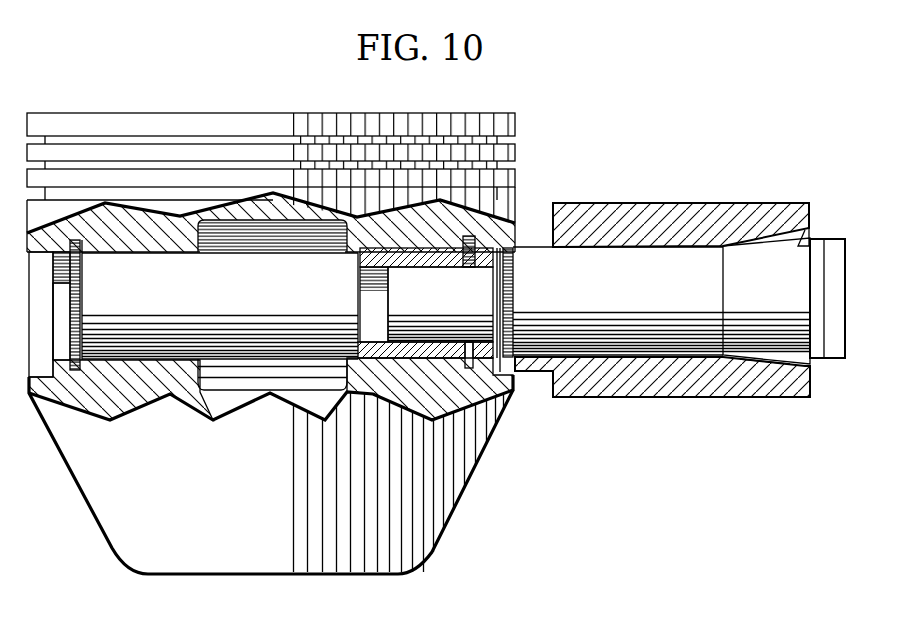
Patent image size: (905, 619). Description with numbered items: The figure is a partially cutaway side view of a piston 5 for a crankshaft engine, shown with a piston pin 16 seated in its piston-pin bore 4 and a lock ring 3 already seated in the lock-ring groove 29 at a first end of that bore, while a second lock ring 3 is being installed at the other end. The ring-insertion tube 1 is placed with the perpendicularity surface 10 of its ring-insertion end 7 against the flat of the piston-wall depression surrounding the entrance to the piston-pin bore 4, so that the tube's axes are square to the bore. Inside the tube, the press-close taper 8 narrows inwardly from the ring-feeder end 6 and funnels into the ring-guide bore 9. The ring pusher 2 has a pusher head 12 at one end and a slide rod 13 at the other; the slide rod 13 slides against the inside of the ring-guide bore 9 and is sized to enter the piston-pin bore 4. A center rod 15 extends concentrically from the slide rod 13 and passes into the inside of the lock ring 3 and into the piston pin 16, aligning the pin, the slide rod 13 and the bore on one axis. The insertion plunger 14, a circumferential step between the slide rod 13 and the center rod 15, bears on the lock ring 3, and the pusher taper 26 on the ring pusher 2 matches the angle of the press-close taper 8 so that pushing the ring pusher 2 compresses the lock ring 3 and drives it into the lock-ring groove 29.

The piston 5 is at (100, 80).
The ring-insertion tube 1 is at (677, 203).
The pusher head 12 is at (837, 257).
The insertion plunger 14 is at (513, 283).
The lock ring 3 is at (83, 310).
The piston pin 16 is at (220, 300).
The ring pusher 2 is at (378, 302).
The center rod 15 is at (425, 303).
The slide rod 13 is at (618, 301).
The pusher taper 26 is at (766, 301).
The perpendicularity surface 10 is at (75, 377).
The piston-pin bore 4 is at (123, 377).
The lock-ring groove 29 is at (467, 367).
The ring-insertion end 7 is at (551, 398).
The ring-guide bore 9 is at (653, 356).
The press-close taper 8 is at (763, 359).
The ring-feeder end 6 is at (810, 398).